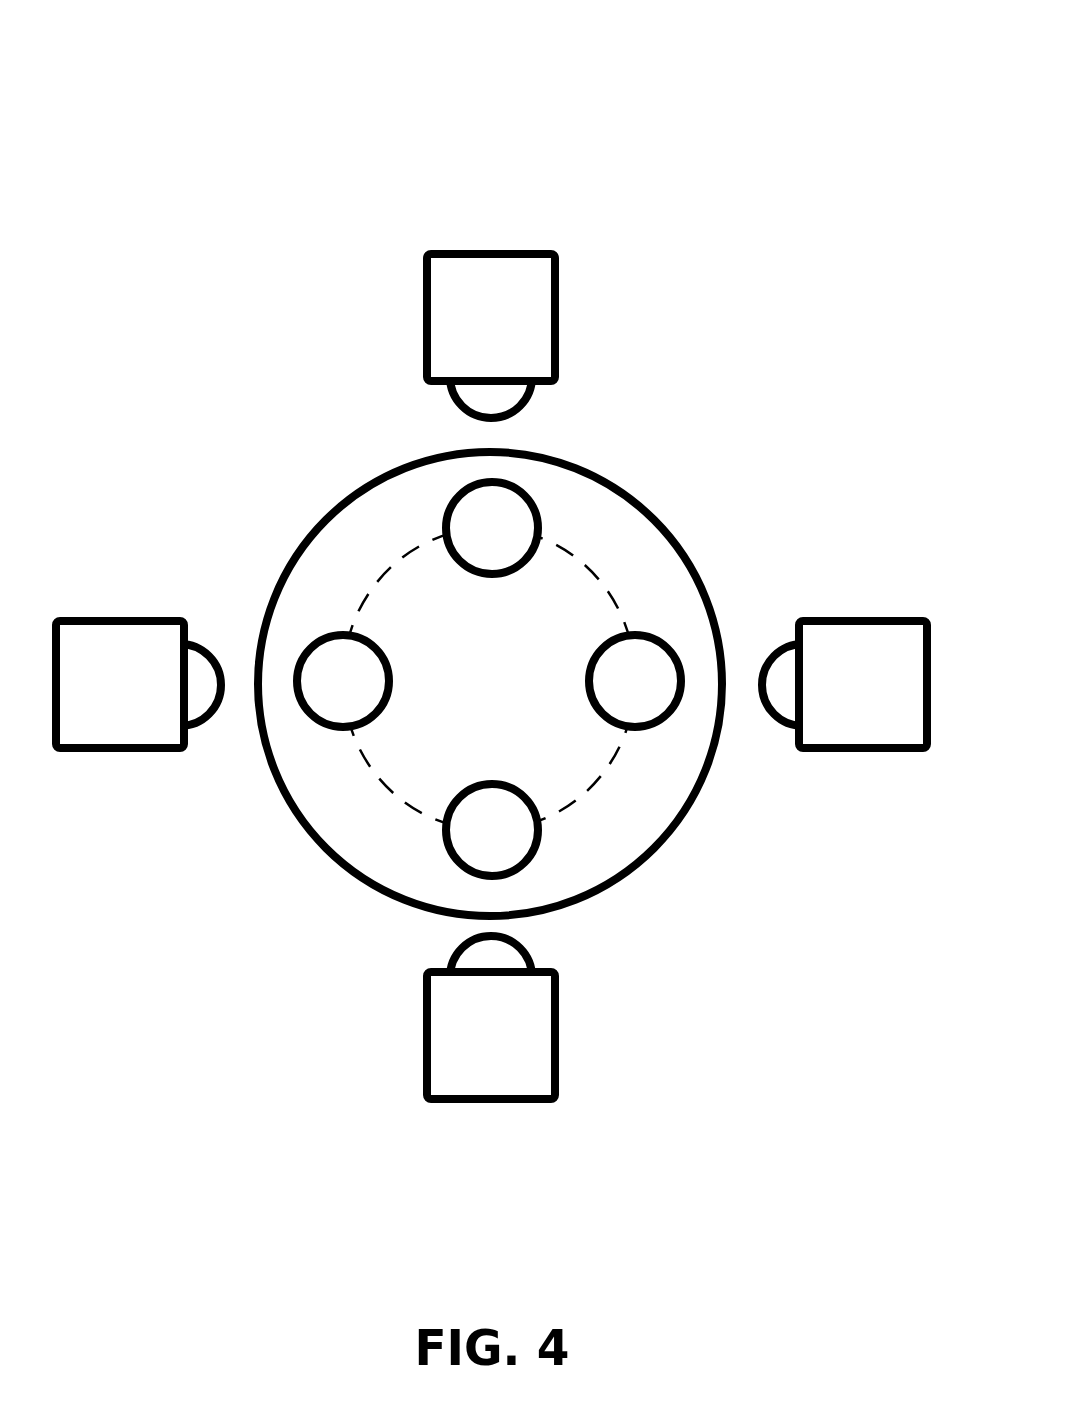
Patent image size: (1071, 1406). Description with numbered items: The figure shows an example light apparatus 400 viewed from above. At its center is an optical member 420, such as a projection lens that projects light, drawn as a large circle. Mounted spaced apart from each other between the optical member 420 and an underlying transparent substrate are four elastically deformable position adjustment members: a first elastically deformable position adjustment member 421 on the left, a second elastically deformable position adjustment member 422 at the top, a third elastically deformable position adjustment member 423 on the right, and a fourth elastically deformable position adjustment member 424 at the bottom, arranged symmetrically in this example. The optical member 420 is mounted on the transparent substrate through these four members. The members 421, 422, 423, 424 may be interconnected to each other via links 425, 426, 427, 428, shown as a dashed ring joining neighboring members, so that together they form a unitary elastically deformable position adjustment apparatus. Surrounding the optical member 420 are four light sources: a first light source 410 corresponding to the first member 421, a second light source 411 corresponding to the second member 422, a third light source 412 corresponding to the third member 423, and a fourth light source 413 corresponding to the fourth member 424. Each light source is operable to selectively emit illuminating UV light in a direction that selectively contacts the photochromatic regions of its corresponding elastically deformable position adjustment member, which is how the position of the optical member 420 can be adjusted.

The light apparatus 400 is at (82, 79).
The first light source 410 is at (118, 617).
The second light source 411 is at (488, 250).
The third light source 412 is at (862, 617).
The fourth light source 413 is at (493, 1103).
The optical member 420 is at (325, 518).
The first elastically deformable position adjustment member 421 is at (314, 696).
The second elastically deformable position adjustment member 422 is at (463, 543).
The third elastically deformable position adjustment member 423 is at (606, 696).
The fourth elastically deformable position adjustment member 424 is at (463, 845).
The link 425 is at (352, 597).
The link 426 is at (378, 803).
The link 427 is at (602, 803).
The link 428 is at (607, 563).